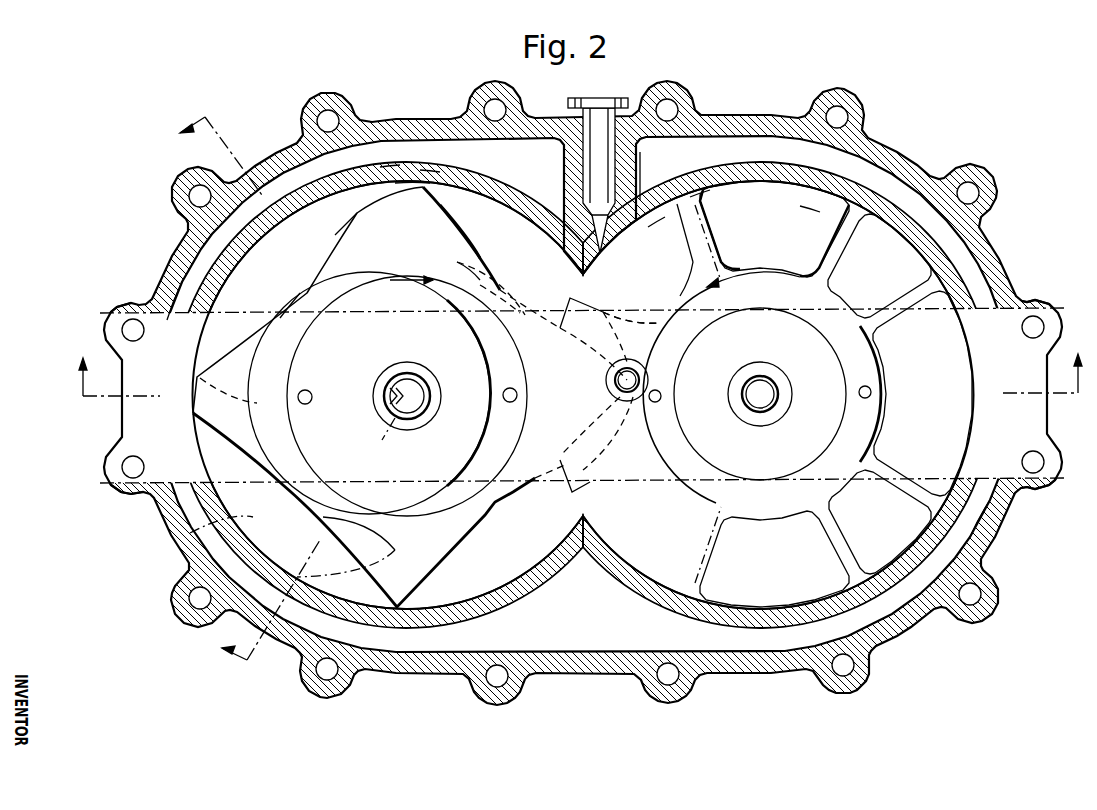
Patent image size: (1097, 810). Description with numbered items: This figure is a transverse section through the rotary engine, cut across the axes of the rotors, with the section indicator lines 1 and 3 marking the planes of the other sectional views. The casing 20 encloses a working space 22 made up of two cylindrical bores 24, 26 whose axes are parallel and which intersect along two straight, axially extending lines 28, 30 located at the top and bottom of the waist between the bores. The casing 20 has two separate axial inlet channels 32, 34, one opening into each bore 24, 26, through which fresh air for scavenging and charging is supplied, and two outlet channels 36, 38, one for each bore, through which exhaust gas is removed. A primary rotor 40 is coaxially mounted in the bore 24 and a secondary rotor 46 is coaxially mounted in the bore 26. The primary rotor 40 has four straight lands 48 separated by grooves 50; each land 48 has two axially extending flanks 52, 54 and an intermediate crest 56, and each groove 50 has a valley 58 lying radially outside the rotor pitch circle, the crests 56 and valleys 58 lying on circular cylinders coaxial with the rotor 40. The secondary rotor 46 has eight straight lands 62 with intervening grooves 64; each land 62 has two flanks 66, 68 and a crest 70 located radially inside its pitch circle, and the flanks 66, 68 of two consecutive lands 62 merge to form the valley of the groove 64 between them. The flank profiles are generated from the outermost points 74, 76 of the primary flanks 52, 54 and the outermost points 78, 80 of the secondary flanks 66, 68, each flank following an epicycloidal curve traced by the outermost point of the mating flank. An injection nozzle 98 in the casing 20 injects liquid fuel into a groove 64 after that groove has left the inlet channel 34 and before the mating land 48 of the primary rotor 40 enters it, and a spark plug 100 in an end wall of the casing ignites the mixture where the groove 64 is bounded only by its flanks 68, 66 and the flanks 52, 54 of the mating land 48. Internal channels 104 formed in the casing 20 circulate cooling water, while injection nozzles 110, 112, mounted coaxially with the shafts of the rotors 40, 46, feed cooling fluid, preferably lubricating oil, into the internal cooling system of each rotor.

The section line 1- 1 is at (243, 388).
The section line 3- 3 is at (581, 363).
The casing 20 is at (715, 127).
The working space 22 is at (647, 176).
The cylindrical bore 24 is at (460, 200).
The cylindrical bore 26 is at (770, 199).
The straight axially extending line 28 is at (583, 287).
The straight axially extending line 30 is at (582, 512).
The axial inlet channel 32 is at (217, 255).
The axial inlet channel 34 is at (808, 209).
The outlet channel 36 is at (220, 522).
The outlet channel 38 is at (990, 520).
The primary rotor 40 is at (490, 297).
The secondary rotor 46 is at (750, 293).
The land 48 is at (457, 262).
The groove 50 is at (278, 260).
The flank 52 is at (467, 222).
The flank 54 is at (347, 223).
The crest 56 is at (405, 185).
The valley 58 is at (297, 293).
The land 62 is at (692, 265).
The groove 64 is at (631, 304).
The flank 66 is at (677, 235).
The flank 68 is at (717, 232).
The crest 70 is at (695, 212).
The outermost point 74 is at (423, 172).
The outermost point 76 is at (393, 170).
The outermost point 78 is at (653, 224).
The outermost point 80 is at (697, 192).
The injection nozzle 98 is at (590, 153).
The spark plug 100 is at (620, 380).
The internal channels 104 is at (303, 177).
The injection nozzle 110 is at (418, 390).
The injection nozzle 112 is at (768, 388).